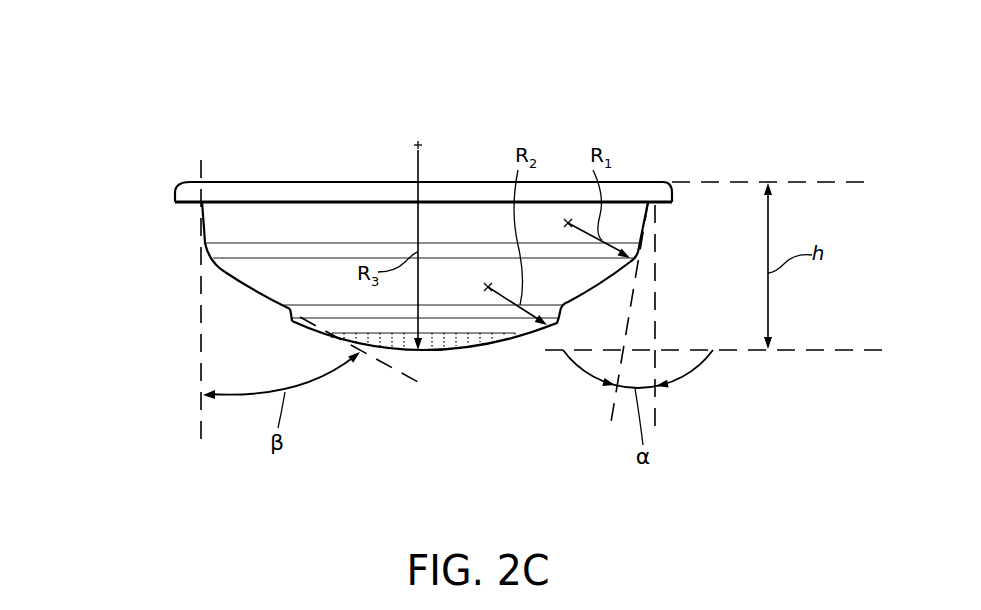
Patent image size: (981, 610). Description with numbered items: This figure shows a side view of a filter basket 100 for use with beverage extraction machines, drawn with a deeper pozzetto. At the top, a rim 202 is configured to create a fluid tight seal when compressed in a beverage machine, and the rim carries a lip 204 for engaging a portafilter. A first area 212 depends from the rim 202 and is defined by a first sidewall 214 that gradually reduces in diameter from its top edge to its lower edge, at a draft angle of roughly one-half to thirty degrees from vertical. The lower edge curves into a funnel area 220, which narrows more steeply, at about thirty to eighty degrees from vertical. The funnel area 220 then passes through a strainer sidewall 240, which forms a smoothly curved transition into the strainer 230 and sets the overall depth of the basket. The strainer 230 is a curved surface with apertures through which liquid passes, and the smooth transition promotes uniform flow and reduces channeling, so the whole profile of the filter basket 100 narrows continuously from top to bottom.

The filter basket 100 is at (377, 221).
The rim 202 is at (657, 196).
The lip 204 is at (663, 205).
The first area 212 is at (192, 230).
The first sidewall 214 is at (202, 215).
The funnel area 220 is at (238, 288).
The strainer 230 is at (423, 364).
The strainer sidewall 240 is at (290, 313).